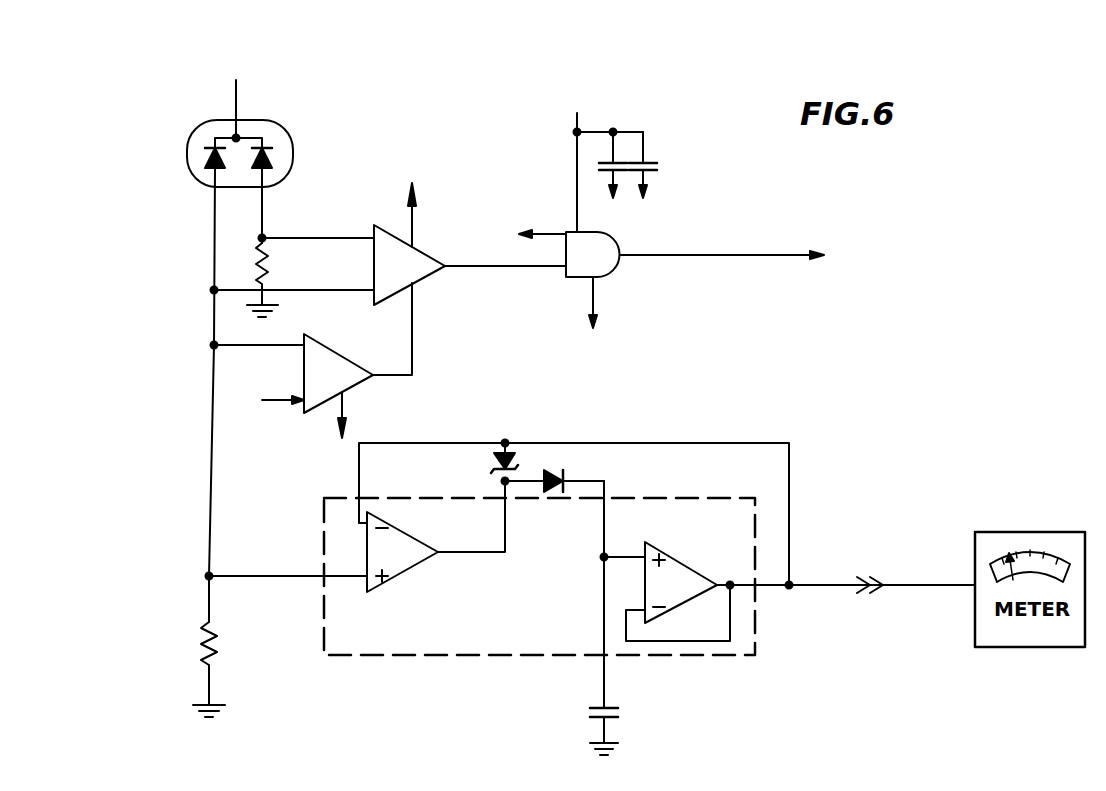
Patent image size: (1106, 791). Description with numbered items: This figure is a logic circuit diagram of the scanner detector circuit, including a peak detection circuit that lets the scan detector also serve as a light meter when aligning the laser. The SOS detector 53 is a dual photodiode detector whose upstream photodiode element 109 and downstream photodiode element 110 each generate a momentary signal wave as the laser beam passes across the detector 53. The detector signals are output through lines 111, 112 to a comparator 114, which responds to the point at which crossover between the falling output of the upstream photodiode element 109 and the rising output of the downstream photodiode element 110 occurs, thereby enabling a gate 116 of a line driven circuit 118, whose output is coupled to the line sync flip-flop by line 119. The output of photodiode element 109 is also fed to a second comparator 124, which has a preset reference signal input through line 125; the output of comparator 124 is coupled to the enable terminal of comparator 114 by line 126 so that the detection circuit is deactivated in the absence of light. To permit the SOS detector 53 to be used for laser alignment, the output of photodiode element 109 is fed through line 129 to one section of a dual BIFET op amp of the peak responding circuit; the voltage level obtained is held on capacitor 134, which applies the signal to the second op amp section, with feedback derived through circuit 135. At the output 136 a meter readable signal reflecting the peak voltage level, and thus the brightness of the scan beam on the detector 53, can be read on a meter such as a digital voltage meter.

The SOS detector 53 is at (336, 118).
The upstream photodiode element 109 is at (211, 173).
The downstream photodiode element 110 is at (270, 163).
The line 111 is at (214, 228).
The line 112 is at (265, 231).
The comparator 114 is at (420, 247).
The gate 116 is at (614, 238).
The line driven circuit 118 is at (649, 118).
The line 119 is at (726, 257).
The second comparator 124 is at (352, 392).
The line 125 is at (294, 402).
The line 126 is at (412, 348).
The line 129 is at (278, 578).
The capacitor 134 is at (612, 708).
The circuit 135 is at (599, 422).
The output 136 is at (828, 592).